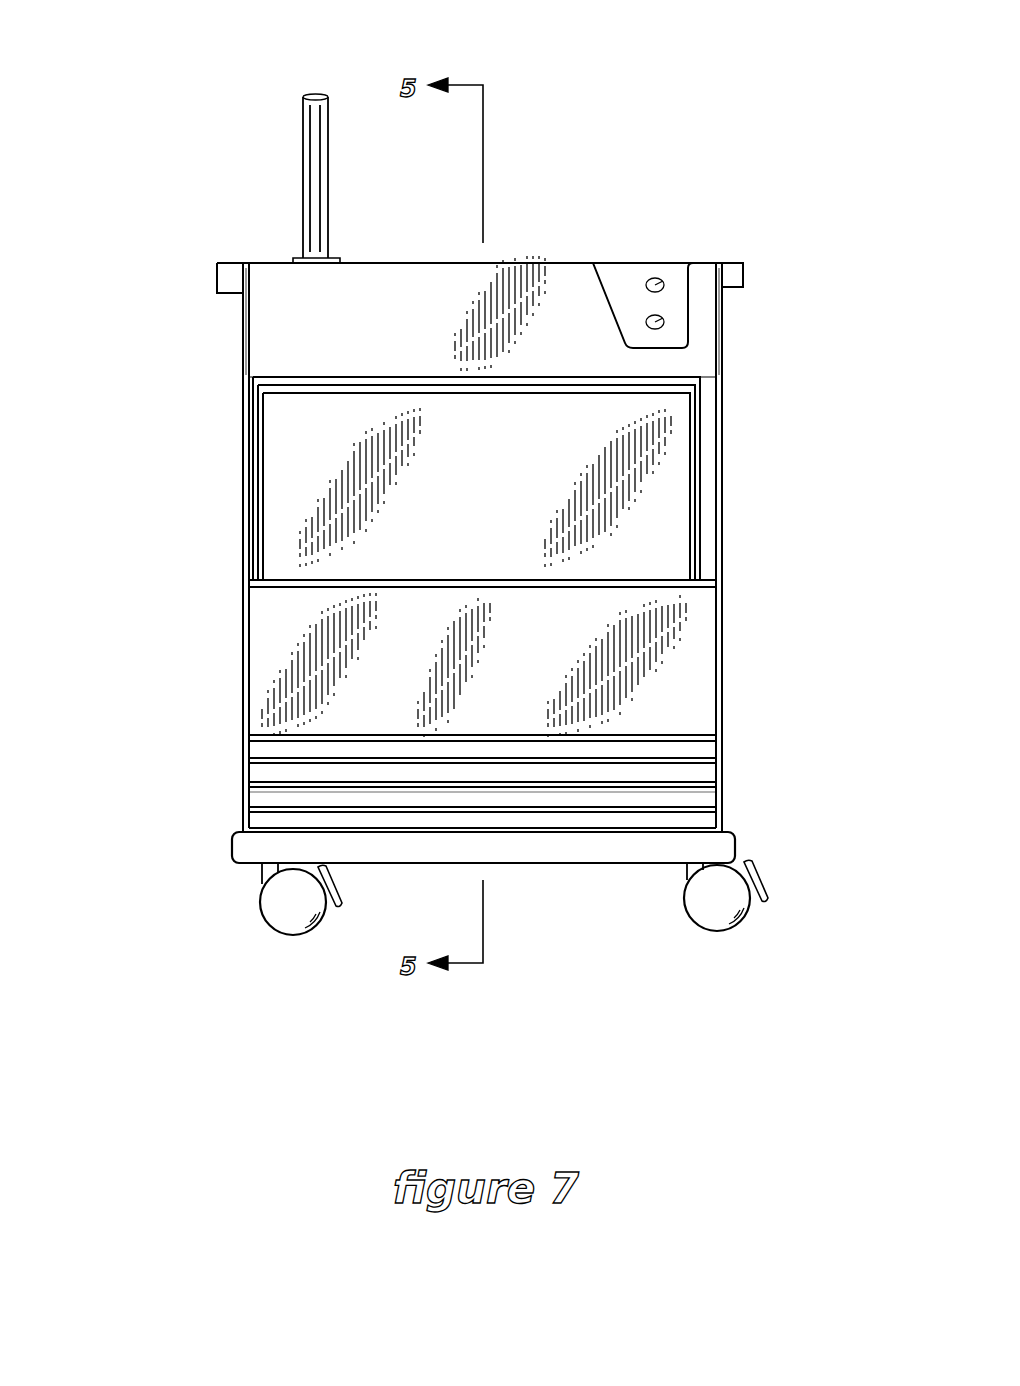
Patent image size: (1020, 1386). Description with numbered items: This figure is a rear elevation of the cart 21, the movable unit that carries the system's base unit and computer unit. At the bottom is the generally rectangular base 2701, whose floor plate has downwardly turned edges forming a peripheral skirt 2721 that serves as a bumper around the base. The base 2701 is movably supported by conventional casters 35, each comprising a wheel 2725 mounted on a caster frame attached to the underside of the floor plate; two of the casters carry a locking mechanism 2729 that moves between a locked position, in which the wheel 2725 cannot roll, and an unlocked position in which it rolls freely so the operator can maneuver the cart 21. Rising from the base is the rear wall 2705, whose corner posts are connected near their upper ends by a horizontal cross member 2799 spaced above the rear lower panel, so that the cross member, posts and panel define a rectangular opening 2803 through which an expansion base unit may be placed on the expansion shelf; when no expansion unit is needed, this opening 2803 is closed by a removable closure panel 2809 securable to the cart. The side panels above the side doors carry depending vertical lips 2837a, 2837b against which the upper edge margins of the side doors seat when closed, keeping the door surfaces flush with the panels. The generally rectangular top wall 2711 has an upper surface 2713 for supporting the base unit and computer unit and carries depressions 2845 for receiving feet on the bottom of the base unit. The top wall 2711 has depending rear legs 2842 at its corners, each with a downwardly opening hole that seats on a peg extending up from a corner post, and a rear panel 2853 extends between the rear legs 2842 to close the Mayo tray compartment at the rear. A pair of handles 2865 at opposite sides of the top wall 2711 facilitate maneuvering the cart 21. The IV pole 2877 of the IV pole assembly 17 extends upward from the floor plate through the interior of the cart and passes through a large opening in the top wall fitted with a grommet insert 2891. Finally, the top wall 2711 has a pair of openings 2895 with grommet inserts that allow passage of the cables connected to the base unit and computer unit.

The IV pole assembly 17 is at (333, 135).
The cart 21 is at (670, 251).
The casters 35 is at (284, 935).
The base 2701 is at (223, 834).
The rear wall 2705 is at (688, 653).
The top wall 2711 is at (484, 252).
The upper surface 2713 is at (577, 262).
The peripheral skirt 2721 is at (602, 862).
The wheel 2725 is at (265, 932).
The locking mechanism 2729 is at (340, 895).
The cross member 2799 is at (612, 395).
The rectangular opening 2803 is at (265, 485).
The removable closure panel 2809 is at (673, 528).
The vertical lip 2837a is at (242, 668).
The vertical lip 2837b is at (722, 748).
The rear legs 2842 is at (243, 322).
The depressions 2845 is at (423, 772).
The rear panel 2853 is at (405, 282).
The handles 2865 is at (217, 278).
The IV pole 2877 is at (302, 125).
The grommet insert 2891 is at (292, 262).
The openings 2895 is at (663, 283).